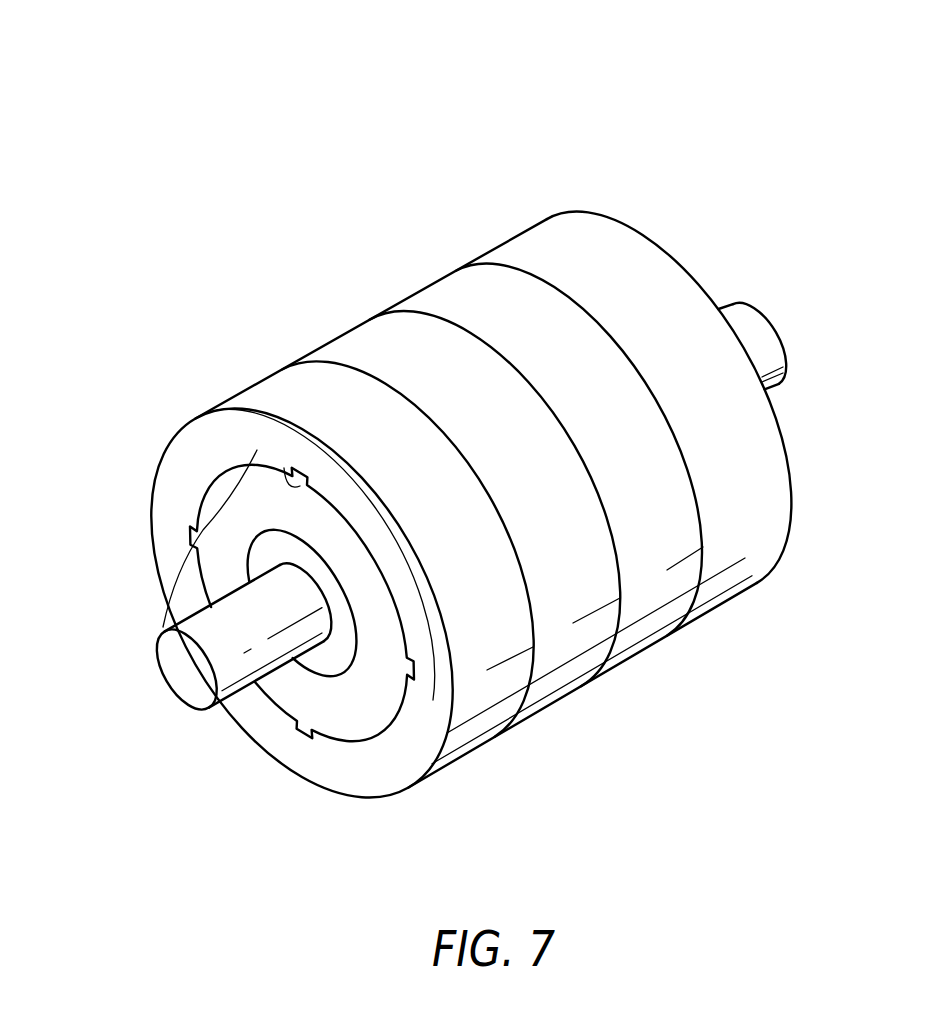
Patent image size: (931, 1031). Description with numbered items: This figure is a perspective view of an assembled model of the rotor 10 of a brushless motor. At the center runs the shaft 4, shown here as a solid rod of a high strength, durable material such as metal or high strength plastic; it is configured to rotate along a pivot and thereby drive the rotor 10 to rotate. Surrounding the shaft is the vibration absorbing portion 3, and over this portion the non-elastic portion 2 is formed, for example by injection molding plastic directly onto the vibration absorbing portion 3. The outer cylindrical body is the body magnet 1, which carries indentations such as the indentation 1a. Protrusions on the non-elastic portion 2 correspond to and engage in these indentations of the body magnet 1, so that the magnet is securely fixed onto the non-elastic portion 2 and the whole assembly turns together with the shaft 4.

The rotor 10 is at (336, 162).
The body magnet 1 is at (740, 543).
The indentation 1a is at (300, 728).
The non-elastic portion 2 is at (217, 502).
The vibration absorbing portion 3 is at (270, 550).
The shaft 4 is at (203, 618).